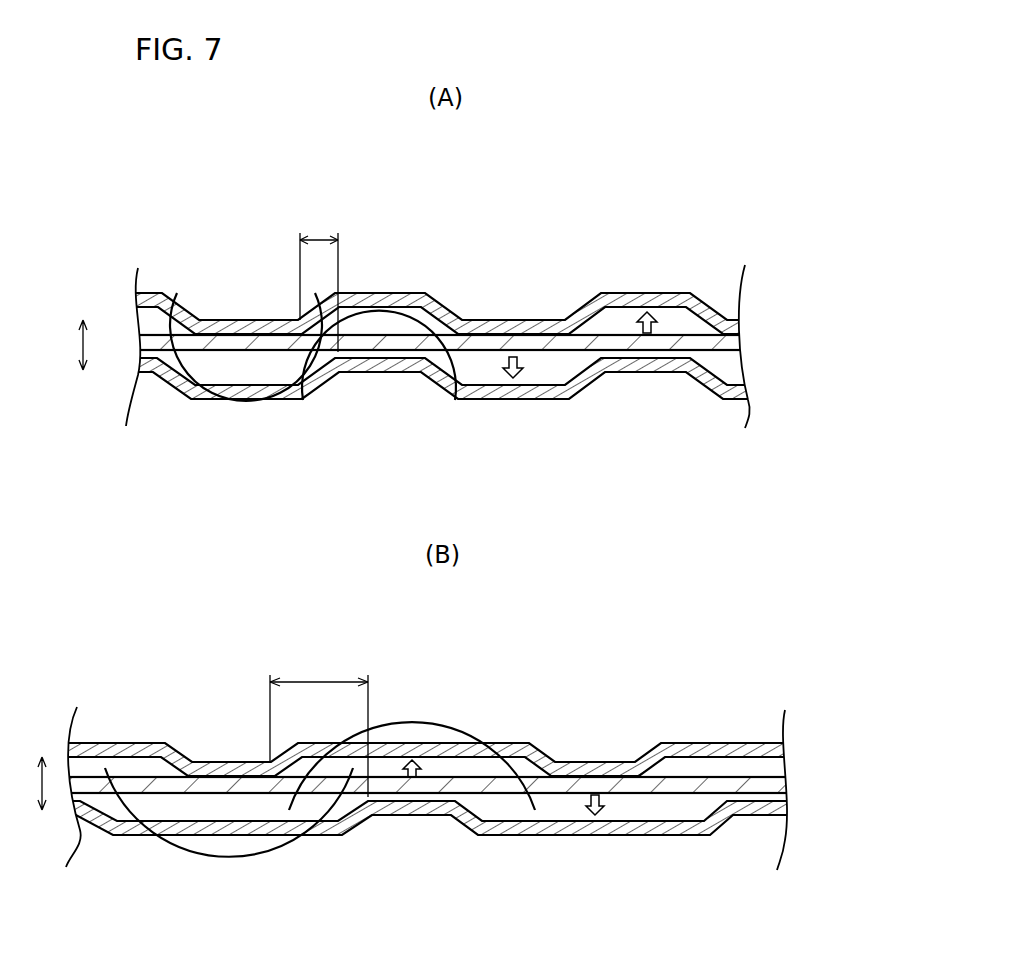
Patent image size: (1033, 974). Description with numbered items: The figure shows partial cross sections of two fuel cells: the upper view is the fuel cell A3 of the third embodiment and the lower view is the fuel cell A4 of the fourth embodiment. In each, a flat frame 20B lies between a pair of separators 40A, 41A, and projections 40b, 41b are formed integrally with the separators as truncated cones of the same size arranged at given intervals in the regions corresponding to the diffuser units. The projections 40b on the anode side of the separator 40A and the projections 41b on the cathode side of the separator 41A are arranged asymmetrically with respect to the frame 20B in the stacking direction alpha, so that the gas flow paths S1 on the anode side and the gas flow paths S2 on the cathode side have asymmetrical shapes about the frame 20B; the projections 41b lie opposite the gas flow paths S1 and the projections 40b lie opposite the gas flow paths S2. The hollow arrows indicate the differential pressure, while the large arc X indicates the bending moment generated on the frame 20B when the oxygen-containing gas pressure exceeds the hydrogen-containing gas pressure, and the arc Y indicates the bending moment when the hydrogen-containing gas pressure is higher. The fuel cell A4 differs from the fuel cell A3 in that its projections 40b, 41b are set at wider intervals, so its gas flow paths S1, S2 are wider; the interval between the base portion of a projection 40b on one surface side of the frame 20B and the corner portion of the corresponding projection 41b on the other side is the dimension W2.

The separator 40A is at (668, 292).
The projections 40b is at (248, 318).
The separator 41A is at (168, 388).
The projections 41b is at (376, 376).
The frame 20B is at (737, 343).
The gas flow paths S1 is at (385, 313).
The gas flow paths S2 is at (230, 390).
The bending moment X is at (426, 320).
The bending moment Y is at (276, 398).
The dimension W2 is at (319, 502).
The stacking direction alpha is at (52, 565).
The fuel cell A3 is at (155, 249).
The fuel cell A4 is at (128, 704).